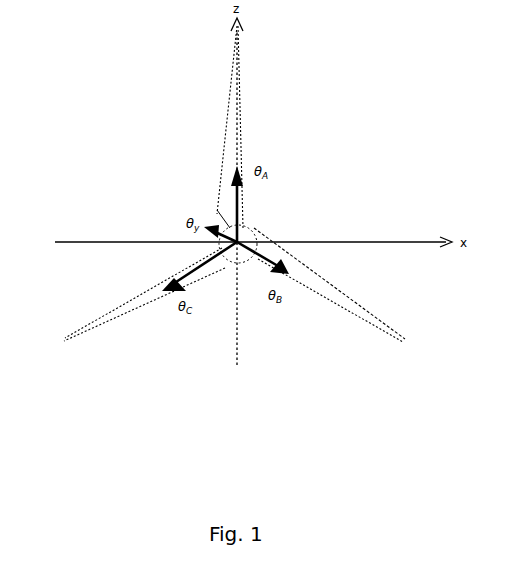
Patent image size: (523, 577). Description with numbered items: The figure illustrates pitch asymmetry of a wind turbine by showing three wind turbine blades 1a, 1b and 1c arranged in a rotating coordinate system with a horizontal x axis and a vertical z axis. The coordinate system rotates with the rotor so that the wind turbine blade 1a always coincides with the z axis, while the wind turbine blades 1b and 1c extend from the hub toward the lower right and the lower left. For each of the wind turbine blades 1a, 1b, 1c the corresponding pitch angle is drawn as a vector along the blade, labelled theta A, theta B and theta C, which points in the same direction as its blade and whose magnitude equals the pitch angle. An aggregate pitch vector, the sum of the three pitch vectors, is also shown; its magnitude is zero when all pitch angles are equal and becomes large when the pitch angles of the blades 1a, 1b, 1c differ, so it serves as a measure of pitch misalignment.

The wind turbine blade 1a is at (237, 140).
The wind turbine blade 1b is at (318, 290).
The wind turbine blade 1c is at (138, 300).